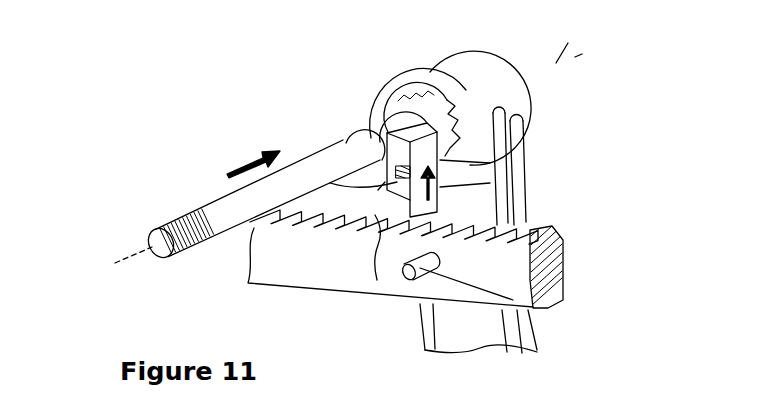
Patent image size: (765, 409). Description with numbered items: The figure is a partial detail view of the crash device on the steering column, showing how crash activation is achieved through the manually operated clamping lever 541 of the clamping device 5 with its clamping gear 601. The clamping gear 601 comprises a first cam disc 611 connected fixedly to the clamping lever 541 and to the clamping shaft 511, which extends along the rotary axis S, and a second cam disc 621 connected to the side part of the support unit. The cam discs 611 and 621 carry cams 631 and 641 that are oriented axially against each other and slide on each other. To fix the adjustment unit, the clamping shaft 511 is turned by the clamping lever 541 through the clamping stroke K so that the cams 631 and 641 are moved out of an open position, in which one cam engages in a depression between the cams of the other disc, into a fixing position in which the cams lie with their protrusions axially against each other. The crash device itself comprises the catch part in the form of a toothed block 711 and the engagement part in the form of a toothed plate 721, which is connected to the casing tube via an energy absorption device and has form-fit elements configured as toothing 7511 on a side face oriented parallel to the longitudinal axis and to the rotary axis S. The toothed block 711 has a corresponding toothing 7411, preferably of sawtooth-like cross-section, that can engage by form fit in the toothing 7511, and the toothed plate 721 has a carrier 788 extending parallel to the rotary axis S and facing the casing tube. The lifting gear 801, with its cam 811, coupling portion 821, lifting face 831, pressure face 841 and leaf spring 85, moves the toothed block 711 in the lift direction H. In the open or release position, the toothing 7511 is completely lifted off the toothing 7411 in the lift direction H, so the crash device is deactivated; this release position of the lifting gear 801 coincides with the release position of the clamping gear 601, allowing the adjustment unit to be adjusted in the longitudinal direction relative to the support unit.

The clamping device 5 is at (133, 128).
The clamping shaft 511 is at (220, 208).
The clamping stroke K is at (247, 160).
The cam 811 is at (383, 160).
The lifting gear 801 is at (357, 107).
The second cam disc 621 is at (397, 105).
The first cam disc 611 is at (438, 80).
The clamping gear 601 is at (430, 42).
The lifting face 831 is at (428, 145).
The rotary axis S is at (568, 43).
The cam 631 is at (524, 75).
The cam 641 is at (495, 100).
The clamping lever 541 is at (500, 148).
The coupling portion 821 is at (440, 160).
The lift direction H is at (490, 172).
The toothed block 711 is at (410, 206).
The pressure face 841 is at (397, 212).
The toothing 7411 is at (378, 190).
The leaf spring 85 is at (377, 280).
The toothing 7511 is at (497, 250).
The toothed plate 721 is at (502, 280).
The carrier 788 is at (520, 300).